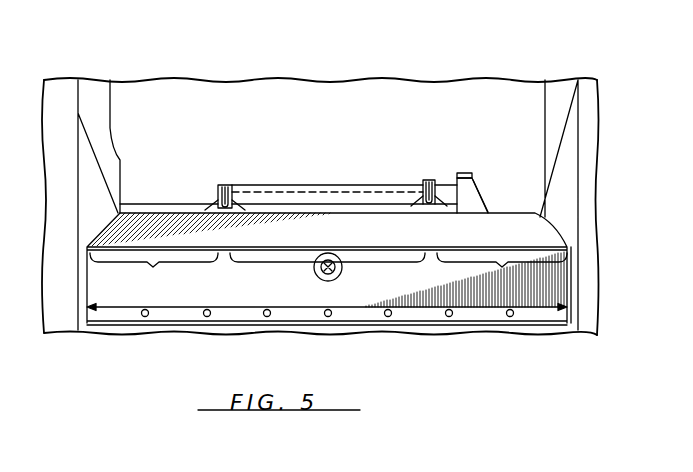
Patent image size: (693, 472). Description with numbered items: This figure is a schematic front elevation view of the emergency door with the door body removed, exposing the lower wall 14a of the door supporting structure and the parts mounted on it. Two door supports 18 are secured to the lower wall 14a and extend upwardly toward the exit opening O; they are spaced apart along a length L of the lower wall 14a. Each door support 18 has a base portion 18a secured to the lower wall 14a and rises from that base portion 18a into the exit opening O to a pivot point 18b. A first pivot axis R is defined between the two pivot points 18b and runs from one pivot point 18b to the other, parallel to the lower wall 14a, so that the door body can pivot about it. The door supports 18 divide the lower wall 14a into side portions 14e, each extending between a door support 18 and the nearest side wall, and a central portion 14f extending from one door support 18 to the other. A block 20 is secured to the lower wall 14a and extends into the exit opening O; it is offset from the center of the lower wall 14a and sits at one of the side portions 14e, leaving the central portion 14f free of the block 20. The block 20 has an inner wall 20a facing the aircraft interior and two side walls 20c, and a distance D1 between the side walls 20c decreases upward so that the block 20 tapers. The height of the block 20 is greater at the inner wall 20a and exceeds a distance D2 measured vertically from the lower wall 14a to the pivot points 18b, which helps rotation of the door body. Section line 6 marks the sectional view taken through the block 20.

The lower wall 14a is at (540, 257).
The side portions 14e is at (328, 277).
The central portion 14f is at (316, 264).
The door supports 18 is at (197, 184).
The base portion 18a is at (238, 204).
The pivot point 18b is at (413, 178).
The block 20 is at (492, 162).
The inner wall 20a is at (473, 203).
The side walls 20c is at (457, 176).
The distance between side walls D1 is at (437, 193).
The distance to pivot points D2 is at (275, 204).
The first pivot axis R is at (353, 192).
The length of the lower wall L is at (193, 307).
The exit opening O is at (257, 22).
The section line 6 is at (490, 255).